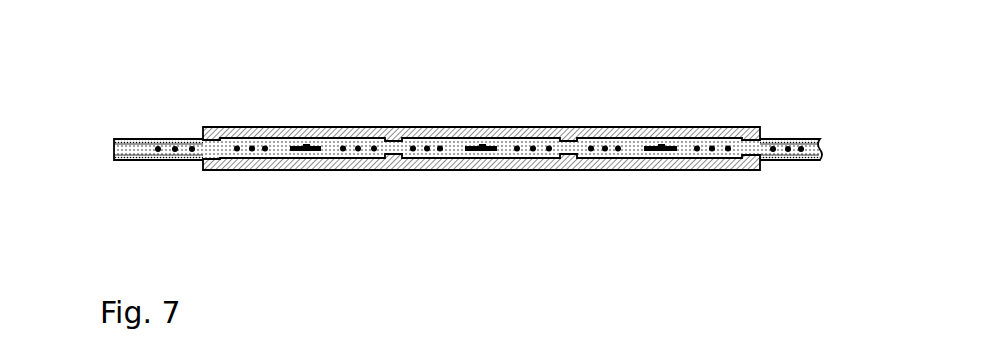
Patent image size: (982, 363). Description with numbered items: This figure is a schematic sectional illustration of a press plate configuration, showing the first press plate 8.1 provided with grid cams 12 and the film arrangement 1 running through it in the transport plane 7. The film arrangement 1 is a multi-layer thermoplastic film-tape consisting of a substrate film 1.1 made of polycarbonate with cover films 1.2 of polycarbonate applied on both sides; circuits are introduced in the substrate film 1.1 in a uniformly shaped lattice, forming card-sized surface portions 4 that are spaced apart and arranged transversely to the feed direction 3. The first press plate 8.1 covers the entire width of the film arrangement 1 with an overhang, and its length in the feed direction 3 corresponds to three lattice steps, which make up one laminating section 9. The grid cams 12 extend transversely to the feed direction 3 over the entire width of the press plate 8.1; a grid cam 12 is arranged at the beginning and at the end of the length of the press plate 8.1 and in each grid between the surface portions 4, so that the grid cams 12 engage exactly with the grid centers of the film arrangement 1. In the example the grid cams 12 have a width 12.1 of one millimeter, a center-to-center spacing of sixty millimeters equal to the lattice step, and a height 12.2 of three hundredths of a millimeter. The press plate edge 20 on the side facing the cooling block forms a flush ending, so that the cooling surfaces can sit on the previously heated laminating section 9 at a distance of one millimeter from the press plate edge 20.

The film arrangement 1 is at (114, 148).
The substrate film 1.1 is at (184, 160).
The cover films 1.2 is at (147, 139).
The feed direction 3 is at (823, 148).
The surface portions 4 is at (301, 158).
The transport plane 7 is at (804, 126).
The first press plate 8.1 is at (427, 127).
The laminating section 9 is at (481, 139).
The grid cams 12 is at (392, 156).
The width of the grid cams 12.1 is at (398, 156).
The height of the grid cams 12.2 is at (575, 158).
The press plate edge 20 is at (761, 127).